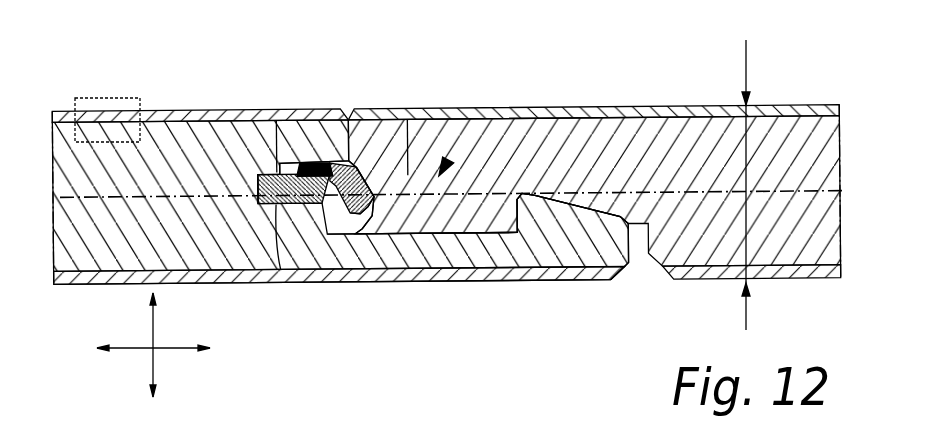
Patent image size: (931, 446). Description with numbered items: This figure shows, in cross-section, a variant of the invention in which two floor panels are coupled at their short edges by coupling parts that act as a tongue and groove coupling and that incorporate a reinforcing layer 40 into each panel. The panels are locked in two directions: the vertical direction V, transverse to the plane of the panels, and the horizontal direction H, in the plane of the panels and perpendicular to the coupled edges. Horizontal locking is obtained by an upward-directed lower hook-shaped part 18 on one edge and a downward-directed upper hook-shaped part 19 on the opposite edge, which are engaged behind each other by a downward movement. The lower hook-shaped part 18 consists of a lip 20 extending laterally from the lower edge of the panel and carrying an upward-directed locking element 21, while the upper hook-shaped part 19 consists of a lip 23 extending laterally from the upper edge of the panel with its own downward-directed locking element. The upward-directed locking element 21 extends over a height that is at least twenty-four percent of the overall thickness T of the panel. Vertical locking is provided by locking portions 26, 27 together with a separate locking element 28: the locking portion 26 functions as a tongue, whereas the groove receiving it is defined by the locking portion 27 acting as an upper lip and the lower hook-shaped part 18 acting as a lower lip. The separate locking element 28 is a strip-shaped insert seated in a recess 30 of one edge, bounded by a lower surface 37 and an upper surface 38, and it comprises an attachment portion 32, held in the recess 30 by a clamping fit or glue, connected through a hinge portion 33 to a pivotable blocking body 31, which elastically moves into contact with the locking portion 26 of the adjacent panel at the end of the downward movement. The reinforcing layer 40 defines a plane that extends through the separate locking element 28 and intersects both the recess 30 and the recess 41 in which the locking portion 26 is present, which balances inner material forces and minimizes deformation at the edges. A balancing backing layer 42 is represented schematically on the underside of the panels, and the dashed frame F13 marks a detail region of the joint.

The lower hook-shaped part 18 is at (428, 286).
The upper hook-shaped part 19 is at (488, 108).
The lip 20 is at (365, 245).
The upward-directed locking element 21 is at (566, 230).
The lip 23 is at (583, 170).
The locking portion 26 is at (425, 236).
The locking portion 27 is at (365, 148).
The separate locking element 28 is at (355, 152).
The recess 30 is at (258, 199).
The blocking body 31 is at (342, 157).
The attachment portion 32 is at (258, 183).
The hinge portion 33 is at (330, 160).
The lower surface 37 is at (280, 268).
The upper surface 38 is at (281, 162).
The reinforcing layer 40 is at (62, 197).
The recess 41 is at (399, 172).
The balancing backing layer 42 is at (493, 276).
The detail region of Fig. 13 F13 is at (110, 97).
The overall thickness T is at (747, 72).
The vertical direction V is at (156, 339).
The horizontal direction H is at (188, 348).